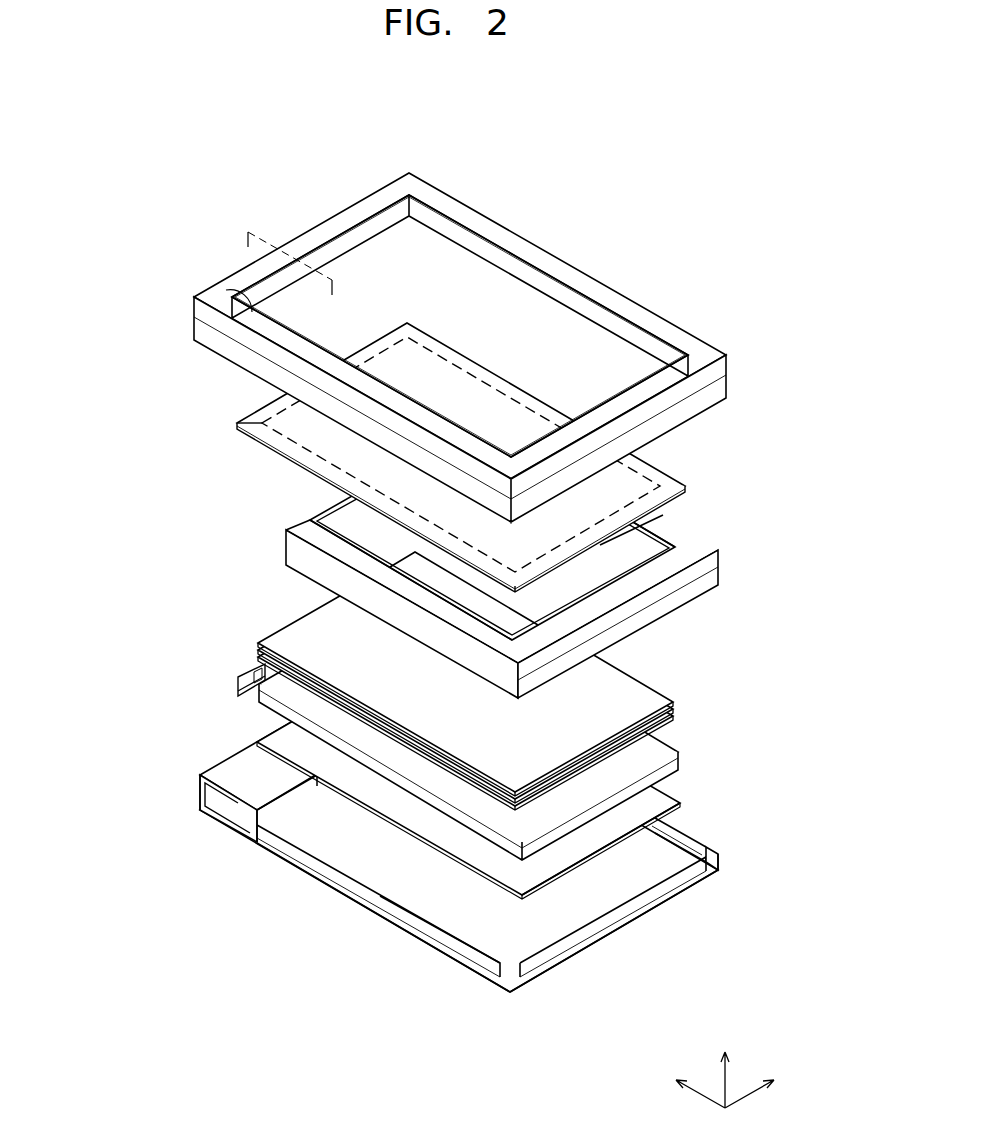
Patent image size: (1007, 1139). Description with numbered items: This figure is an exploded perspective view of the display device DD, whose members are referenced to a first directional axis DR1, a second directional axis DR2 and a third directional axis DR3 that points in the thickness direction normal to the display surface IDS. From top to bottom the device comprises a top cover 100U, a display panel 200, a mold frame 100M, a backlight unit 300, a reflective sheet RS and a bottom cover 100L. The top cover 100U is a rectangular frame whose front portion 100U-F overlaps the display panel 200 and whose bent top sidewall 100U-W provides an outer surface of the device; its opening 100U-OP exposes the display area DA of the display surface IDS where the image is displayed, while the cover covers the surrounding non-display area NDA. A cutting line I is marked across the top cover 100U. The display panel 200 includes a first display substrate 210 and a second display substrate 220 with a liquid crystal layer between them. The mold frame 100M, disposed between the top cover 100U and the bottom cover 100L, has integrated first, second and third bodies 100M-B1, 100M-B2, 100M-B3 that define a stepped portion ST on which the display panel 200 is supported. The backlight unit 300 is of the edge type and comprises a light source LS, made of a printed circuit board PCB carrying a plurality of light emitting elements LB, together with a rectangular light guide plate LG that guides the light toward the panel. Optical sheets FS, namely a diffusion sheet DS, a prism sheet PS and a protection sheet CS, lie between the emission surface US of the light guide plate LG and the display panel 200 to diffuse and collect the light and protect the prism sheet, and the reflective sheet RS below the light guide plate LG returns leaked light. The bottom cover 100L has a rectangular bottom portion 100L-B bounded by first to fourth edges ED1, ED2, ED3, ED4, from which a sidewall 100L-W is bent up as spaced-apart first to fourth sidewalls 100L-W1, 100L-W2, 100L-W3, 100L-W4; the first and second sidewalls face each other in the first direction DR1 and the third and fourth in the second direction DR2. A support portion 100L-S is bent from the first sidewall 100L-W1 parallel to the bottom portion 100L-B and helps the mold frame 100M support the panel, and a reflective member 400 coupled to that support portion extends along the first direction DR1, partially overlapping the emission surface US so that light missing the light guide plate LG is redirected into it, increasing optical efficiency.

The display device DD is at (427, 328).
The top cover 100U is at (427, 347).
The opening 100U-OP is at (520, 318).
The front portion 100U-F is at (252, 312).
The sidewall 100U-W is at (254, 359).
The section line I-I' I is at (324, 296).
The display surface IDS is at (377, 454).
The display area DA is at (262, 413).
The non-display area NDA is at (250, 428).
The display panel 200 is at (469, 457).
The second display substrate 220 is at (690, 484).
The first display substrate 210 is at (690, 493).
The mold frame 100M is at (480, 557).
The first body 100M-B1 is at (665, 590).
The second body 100M-B2 is at (665, 530).
The third body 100M-B3 is at (293, 558).
The stepped portion ST is at (325, 530).
The backlight unit 300 is at (365, 727).
The light source LS is at (182, 657).
The light emitting element LB is at (262, 667).
The printed circuit board PCB is at (262, 680).
The light guide plate LG is at (263, 700).
The optical sheets FS is at (519, 680).
The protection sheet CS is at (668, 702).
The prism sheet PS is at (668, 710).
The diffusion sheet DS is at (668, 722).
The reflective member 400 is at (272, 787).
The reflective sheet RS is at (503, 774).
The emission surface US is at (562, 826).
The bottom cover 100L is at (437, 855).
The bottom portion 100L-B is at (453, 905).
The sidewall 100L-W is at (345, 880).
The first sidewall 100L-W1 is at (200, 790).
The second sidewall 100L-W2 is at (650, 905).
The third sidewall 100L-W3 is at (666, 860).
The fourth sidewall 100L-W4 is at (482, 977).
The support portion 100L-S is at (255, 825).
The first edge ED1 is at (216, 815).
The second edge ED2 is at (580, 952).
The third edge ED3 is at (704, 876).
The fourth edge ED4 is at (458, 966).
The first directional axis DR1 is at (681, 1089).
The second directional axis DR2 is at (770, 1089).
The third directional axis DR3 is at (726, 1069).